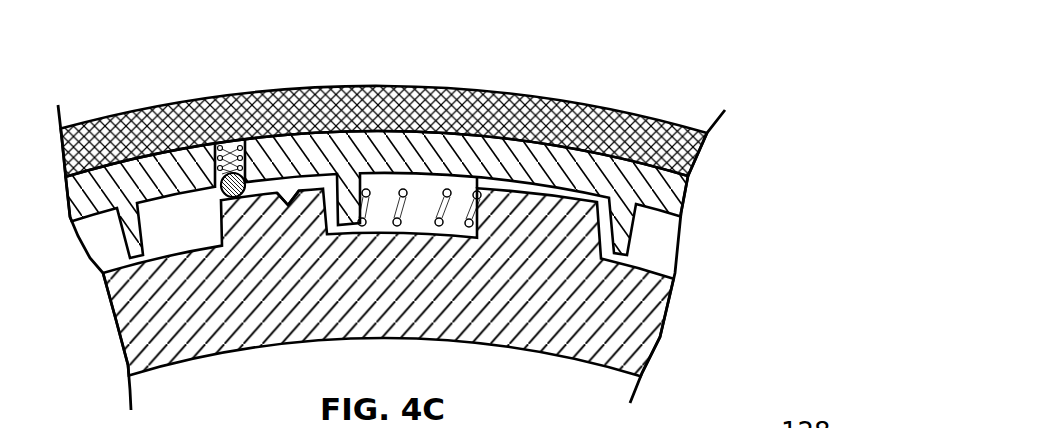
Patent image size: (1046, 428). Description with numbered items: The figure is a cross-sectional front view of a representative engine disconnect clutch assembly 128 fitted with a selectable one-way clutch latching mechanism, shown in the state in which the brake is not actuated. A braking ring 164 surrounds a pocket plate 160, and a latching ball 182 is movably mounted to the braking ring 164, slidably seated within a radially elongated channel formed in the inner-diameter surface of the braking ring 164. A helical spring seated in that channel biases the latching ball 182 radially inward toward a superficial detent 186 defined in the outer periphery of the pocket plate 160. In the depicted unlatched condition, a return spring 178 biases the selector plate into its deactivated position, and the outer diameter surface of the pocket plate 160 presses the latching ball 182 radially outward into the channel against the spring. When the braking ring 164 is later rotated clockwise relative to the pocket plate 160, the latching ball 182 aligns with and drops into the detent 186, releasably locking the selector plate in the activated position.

The engine disconnect clutch assembly 128 is at (442, 208).
The pocket plate 160 is at (653, 333).
The braking ring 164 is at (677, 196).
The return spring 178 is at (402, 189).
The latching ball 182 is at (180, 192).
The detent 186 is at (285, 201).